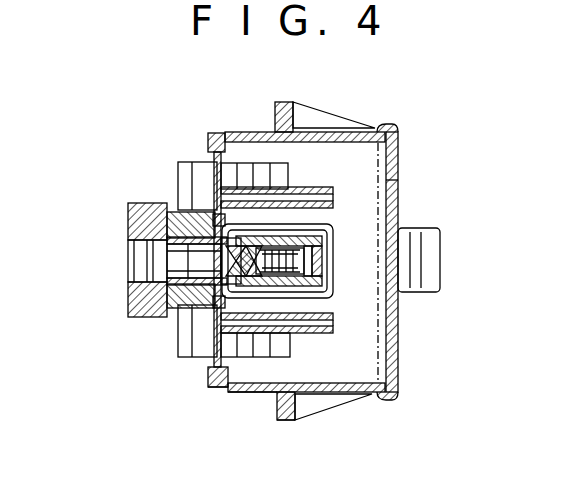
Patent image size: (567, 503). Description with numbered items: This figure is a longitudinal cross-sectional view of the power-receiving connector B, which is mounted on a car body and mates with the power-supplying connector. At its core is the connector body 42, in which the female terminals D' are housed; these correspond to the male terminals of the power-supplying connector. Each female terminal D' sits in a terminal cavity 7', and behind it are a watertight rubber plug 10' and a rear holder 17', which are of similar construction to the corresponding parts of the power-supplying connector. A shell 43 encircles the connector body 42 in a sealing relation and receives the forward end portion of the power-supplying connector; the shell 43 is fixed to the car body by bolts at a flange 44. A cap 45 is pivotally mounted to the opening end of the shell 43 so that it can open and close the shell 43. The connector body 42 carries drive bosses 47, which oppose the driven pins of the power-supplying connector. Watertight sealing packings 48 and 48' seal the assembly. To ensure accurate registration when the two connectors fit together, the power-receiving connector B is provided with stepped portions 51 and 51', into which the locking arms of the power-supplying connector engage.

The power-receiving connector B is at (195, 103).
The cap 45 is at (391, 181).
The stepped portion 51 is at (325, 97).
The stepped portion 51' is at (330, 427).
The flange 44 is at (287, 421).
The connector body 42 is at (235, 393).
The shell 43 is at (267, 393).
The drive boss 47 is at (305, 195).
The terminal cavity 7' is at (296, 247).
The female terminal D' is at (312, 272).
The watertight sealing packing 48 is at (205, 318).
The watertight sealing packing 48' is at (180, 285).
The rear holder 17' is at (137, 250).
The watertight rubber plug 10' is at (139, 281).